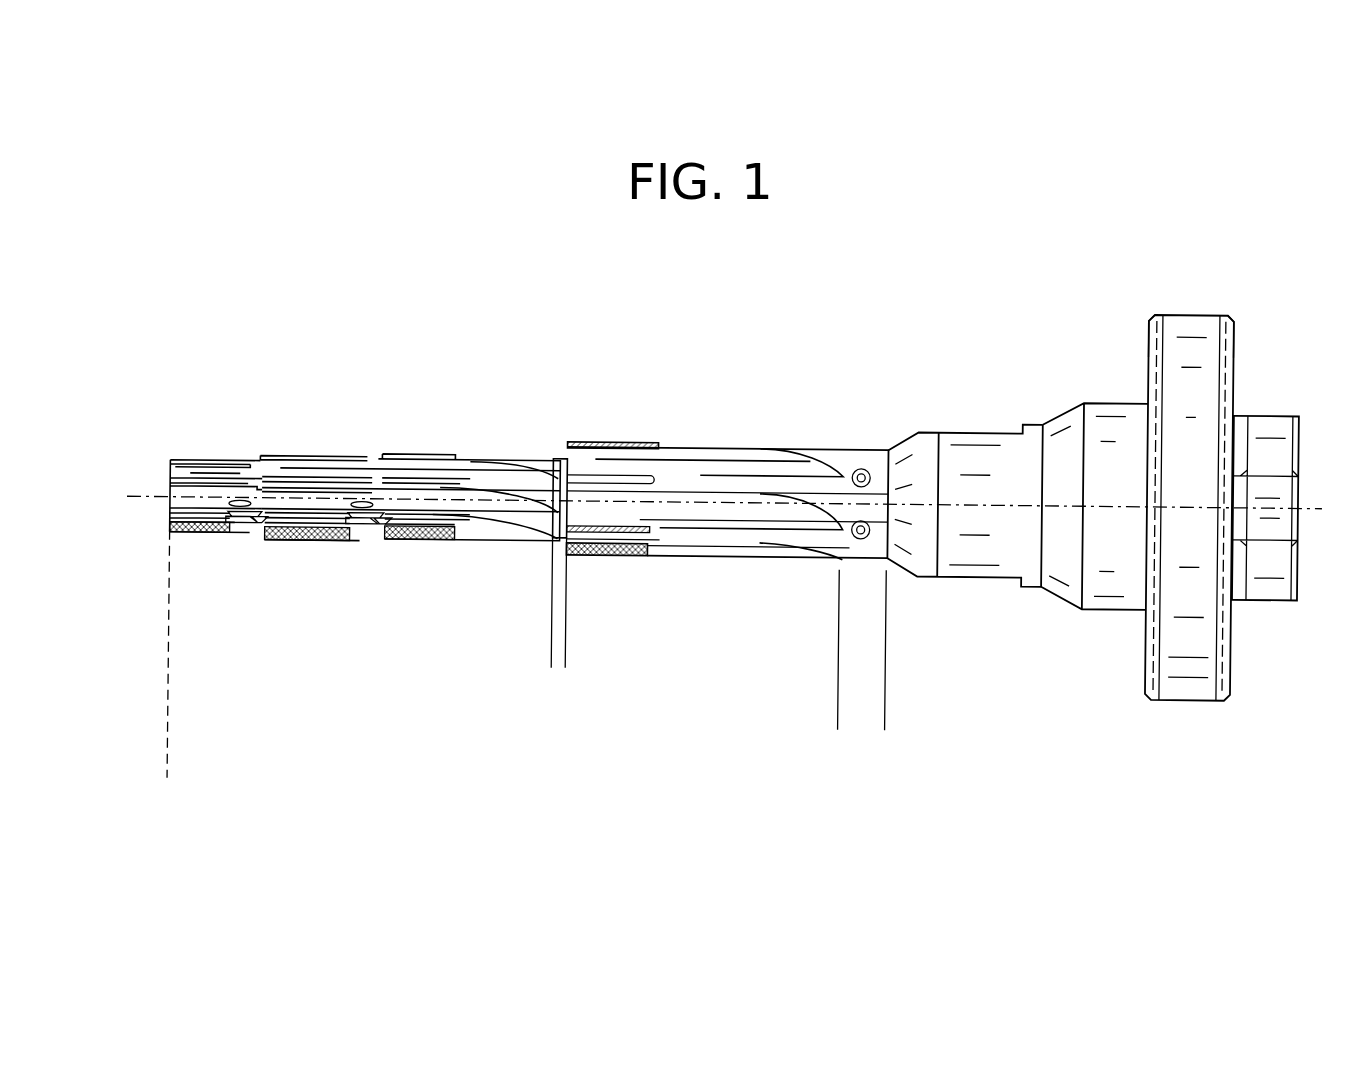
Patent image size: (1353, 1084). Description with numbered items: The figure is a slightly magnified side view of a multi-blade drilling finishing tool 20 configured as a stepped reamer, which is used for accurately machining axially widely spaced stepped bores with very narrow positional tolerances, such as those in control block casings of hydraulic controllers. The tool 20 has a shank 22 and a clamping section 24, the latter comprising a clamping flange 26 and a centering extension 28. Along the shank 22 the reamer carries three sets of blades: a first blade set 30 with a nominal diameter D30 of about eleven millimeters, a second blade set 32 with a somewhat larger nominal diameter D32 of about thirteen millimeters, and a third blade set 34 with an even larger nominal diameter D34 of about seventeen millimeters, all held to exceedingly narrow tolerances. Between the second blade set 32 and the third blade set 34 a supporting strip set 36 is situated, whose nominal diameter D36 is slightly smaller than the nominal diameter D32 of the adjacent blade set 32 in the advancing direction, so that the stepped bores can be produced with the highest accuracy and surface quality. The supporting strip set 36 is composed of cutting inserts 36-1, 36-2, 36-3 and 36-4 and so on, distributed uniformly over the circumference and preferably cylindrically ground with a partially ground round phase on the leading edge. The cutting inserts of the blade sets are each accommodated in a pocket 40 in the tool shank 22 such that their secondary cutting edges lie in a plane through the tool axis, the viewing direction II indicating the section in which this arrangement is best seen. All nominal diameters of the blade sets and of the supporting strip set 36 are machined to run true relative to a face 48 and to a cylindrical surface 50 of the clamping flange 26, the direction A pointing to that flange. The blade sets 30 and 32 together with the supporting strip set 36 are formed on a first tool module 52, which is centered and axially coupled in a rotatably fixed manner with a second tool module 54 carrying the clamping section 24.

The multi-blade drilling finishing tool 20 is at (727, 449).
The shank 22 is at (651, 684).
The clamping section 24 is at (1172, 401).
The clamping flange 26 is at (1189, 544).
The centering extension 28 is at (1291, 508).
The first blade set 30 is at (216, 541).
The second blade set 32 is at (410, 540).
The third blade set 34 is at (727, 533).
The supporting strip set 36 is at (469, 538).
The cutting insert 36-1 is at (452, 553).
The cutting insert 36-2 is at (496, 476).
The cutting insert 36-3 is at (499, 446).
The cutting insert 36-4 is at (504, 411).
The pocket 40 is at (484, 549).
The face 48 is at (1269, 337).
The cylindrical surface 50 is at (1134, 323).
The first tool module 52 is at (541, 563).
The second tool module 54 is at (965, 527).
The axis / direction indicator A is at (1187, 286).
The view direction indicator II is at (95, 505).
The nominal diameter of first blade set D30 is at (188, 412).
The nominal diameter of second blade set D32 is at (288, 404).
The nominal diameter of third blade set D34 is at (607, 393).
The nominal diameter of supporting strip set D36 is at (403, 403).